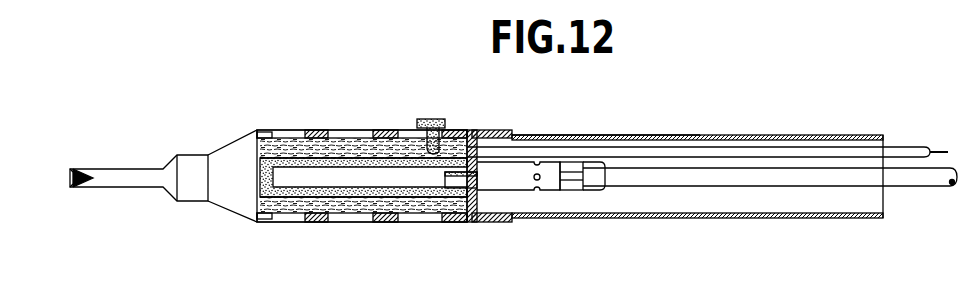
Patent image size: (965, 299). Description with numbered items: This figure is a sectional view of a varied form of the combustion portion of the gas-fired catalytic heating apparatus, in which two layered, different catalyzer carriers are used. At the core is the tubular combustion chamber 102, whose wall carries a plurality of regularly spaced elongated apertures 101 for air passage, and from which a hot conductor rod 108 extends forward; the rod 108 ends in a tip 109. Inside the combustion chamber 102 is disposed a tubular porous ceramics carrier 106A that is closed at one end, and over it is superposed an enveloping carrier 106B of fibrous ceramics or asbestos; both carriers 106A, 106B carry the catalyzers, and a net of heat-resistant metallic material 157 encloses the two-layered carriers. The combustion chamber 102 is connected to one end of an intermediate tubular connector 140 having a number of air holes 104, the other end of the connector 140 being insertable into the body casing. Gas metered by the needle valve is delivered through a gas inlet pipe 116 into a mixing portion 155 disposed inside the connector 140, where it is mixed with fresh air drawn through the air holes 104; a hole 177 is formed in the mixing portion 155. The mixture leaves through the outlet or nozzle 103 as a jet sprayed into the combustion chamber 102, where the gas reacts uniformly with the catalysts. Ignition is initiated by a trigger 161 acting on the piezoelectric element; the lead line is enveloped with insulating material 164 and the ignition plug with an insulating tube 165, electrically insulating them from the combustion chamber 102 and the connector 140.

The hot conductor rod 108 is at (117, 170).
The chisel edge of tip 109 is at (85, 178).
The elongated apertures 101 is at (283, 132).
The combustion chamber 102 is at (317, 135).
The net of heat-resistant metallic material 157 is at (358, 142).
The insulating material 164 is at (415, 120).
The porous ceramics carrier 106A is at (308, 192).
The fibrous ceramics or asbestos carrier 106B is at (360, 203).
The outlet or nozzle 103 is at (452, 180).
The air holes 104 is at (572, 135).
The mixing portion 155 is at (510, 183).
The pin hole 177 is at (542, 180).
The intermediate tubular connector 140 is at (697, 135).
The insulating tube 165 is at (907, 149).
The trigger 161 is at (942, 152).
The gas inlet pipe 116 is at (920, 185).